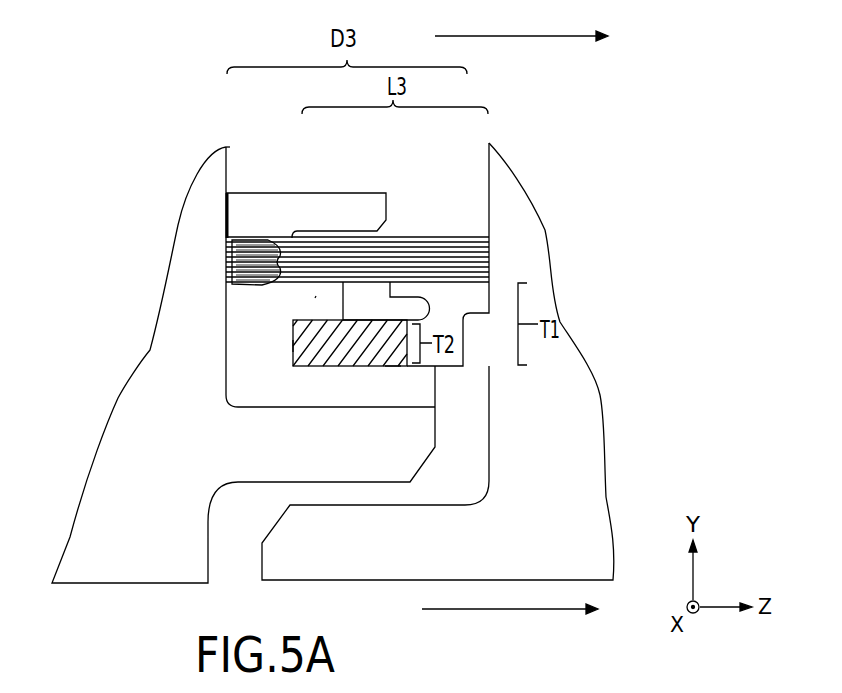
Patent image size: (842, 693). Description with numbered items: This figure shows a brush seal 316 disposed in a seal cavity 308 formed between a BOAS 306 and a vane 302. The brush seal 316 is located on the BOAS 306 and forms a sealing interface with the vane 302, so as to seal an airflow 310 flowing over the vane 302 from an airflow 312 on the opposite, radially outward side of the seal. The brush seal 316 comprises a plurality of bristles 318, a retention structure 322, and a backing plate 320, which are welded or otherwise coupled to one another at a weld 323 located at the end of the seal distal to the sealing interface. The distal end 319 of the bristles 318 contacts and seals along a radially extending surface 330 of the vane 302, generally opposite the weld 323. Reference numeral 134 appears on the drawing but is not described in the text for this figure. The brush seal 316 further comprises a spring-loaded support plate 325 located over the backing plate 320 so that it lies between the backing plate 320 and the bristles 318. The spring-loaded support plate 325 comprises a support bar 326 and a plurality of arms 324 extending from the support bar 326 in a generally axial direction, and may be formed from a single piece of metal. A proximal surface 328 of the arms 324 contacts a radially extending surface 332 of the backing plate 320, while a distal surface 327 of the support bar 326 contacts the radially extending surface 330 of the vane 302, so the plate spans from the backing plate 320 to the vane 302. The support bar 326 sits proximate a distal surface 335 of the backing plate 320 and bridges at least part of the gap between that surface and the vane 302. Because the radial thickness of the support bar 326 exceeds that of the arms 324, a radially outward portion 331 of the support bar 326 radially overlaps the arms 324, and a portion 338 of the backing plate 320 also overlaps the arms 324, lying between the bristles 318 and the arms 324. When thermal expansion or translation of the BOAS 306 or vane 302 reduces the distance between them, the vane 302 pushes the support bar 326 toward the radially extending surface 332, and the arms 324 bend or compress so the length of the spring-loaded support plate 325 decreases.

The first side wall of seal groove 134 is at (227, 180).
The vane 302 is at (548, 484).
The BOAS 306 is at (180, 478).
The seal cavity 308 is at (229, 116).
The airflow 310 is at (491, 612).
The airflow 312 is at (503, 39).
The brush seal 316 is at (361, 176).
The bristles 318 is at (395, 262).
The distal end 319 is at (498, 241).
The backing plate 320 is at (247, 377).
The retention structure 322 is at (275, 222).
The weld 323 is at (218, 253).
The arms 324 is at (347, 345).
The spring-loaded support plate 325 is at (393, 380).
The support bar 326 is at (457, 318).
The distal surface 327 is at (490, 304).
The proximal surface 328 is at (284, 336).
The radially extending surface 330 is at (488, 178).
The radially outward portion 331 is at (400, 292).
The radially extending surface 332 is at (293, 345).
The distal surface 335 is at (437, 397).
The portion 338 is at (315, 298).